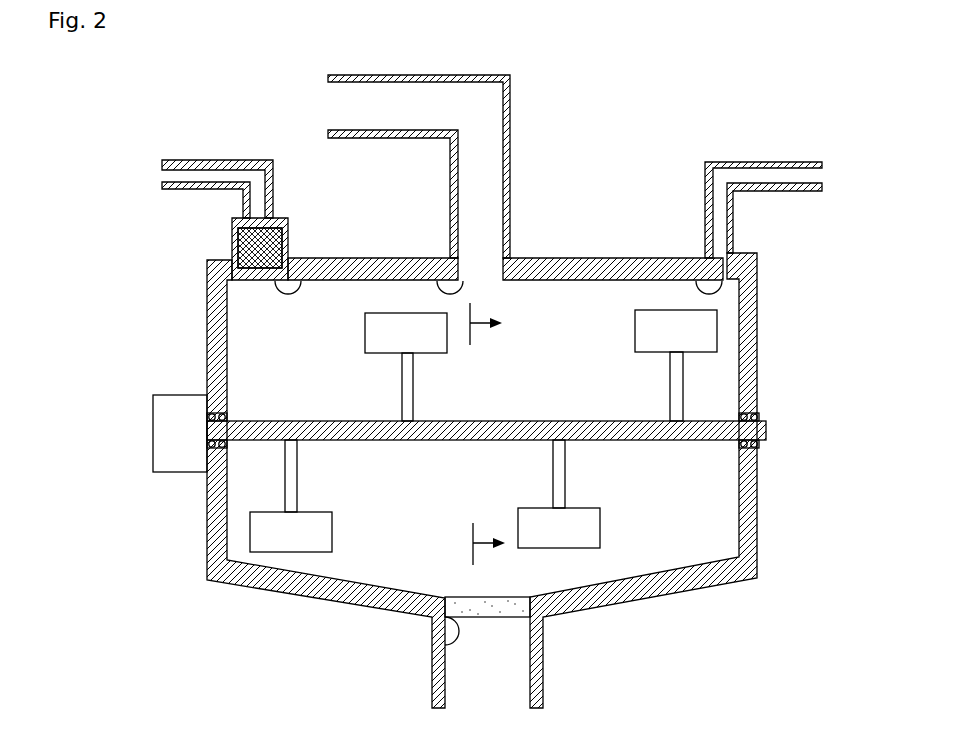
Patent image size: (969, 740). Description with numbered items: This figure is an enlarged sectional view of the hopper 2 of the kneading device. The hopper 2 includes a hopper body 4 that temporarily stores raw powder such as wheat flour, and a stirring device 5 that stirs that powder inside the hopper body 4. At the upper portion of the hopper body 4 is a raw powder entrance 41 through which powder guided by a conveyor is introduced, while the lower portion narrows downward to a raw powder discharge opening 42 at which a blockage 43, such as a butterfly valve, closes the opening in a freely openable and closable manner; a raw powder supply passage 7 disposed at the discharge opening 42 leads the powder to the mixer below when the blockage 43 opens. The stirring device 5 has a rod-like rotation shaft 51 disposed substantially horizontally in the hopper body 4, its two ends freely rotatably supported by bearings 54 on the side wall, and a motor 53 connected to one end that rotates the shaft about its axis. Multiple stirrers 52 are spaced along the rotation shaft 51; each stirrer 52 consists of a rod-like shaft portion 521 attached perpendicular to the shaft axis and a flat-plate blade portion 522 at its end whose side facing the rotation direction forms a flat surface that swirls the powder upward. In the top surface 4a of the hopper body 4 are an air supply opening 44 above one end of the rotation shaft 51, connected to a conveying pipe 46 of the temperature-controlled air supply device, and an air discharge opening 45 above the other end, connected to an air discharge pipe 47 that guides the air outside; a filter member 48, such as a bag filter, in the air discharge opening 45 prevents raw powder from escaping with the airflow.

The hopper 2 is at (604, 181).
The hopper body 4 is at (500, 391).
The top surface 4a is at (543, 257).
The stirring device 5 is at (469, 467).
The raw powder supply passage 7 is at (432, 676).
The raw powder entrance 41 is at (441, 283).
The raw powder discharge opening 42 is at (445, 645).
The blockage 43 is at (500, 609).
The air supply opening 44 is at (698, 289).
The air discharge opening 45 is at (300, 288).
The conveying pipe 46 is at (745, 162).
The air discharge pipe 47 is at (210, 160).
The filter member 48 is at (248, 247).
The rotation shaft 51 is at (638, 440).
The stirrer 52 is at (346, 341).
The motor 53 is at (153, 420).
The bearing 54 is at (228, 448).
The shaft portion 521 is at (285, 488).
The blade portion 522 is at (276, 553).